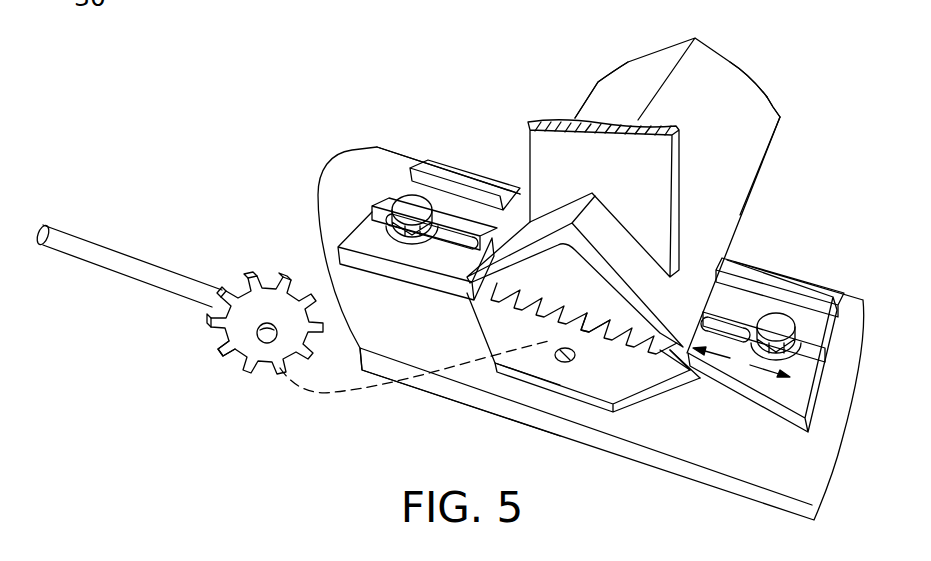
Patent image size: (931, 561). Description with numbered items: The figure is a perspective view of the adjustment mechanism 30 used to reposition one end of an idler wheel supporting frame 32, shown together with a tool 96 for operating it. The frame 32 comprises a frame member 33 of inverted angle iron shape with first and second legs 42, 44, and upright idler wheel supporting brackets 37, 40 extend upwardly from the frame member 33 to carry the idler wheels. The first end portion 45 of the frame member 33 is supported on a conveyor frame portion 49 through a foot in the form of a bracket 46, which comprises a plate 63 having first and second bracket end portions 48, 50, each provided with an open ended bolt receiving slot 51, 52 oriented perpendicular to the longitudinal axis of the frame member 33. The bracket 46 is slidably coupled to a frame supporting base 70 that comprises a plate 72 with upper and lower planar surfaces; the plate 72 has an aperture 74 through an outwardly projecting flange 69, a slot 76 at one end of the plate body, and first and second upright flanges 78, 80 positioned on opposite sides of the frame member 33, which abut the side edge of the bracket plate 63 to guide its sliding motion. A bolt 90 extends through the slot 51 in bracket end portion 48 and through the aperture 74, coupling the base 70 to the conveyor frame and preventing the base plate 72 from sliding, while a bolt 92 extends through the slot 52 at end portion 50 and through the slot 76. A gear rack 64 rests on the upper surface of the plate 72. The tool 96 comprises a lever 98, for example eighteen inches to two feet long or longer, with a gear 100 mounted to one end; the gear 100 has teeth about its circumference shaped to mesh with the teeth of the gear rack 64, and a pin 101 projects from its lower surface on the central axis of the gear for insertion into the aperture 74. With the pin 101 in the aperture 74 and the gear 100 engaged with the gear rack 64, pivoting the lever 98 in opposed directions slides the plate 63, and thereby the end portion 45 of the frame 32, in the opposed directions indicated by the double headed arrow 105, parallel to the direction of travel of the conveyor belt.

The adjustment mechanism 30 is at (385, 426).
The idler wheel supporting frame 32 is at (715, 74).
The frame member 33 is at (752, 133).
The upright idler wheel supporting bracket 37 is at (589, 168).
The upright idler wheel supporting bracket 40 is at (746, 114).
The first leg 42 is at (718, 196).
The second leg 44 is at (623, 87).
The first end portion 45 is at (711, 238).
The bracket 46 is at (492, 202).
The first bracket end portion 48 is at (787, 393).
The conveyor frame portion 49 is at (643, 430).
The second bracket end portion 50 is at (400, 262).
The first bolt receiving slot 51 is at (718, 330).
The second bolt receiving slot 52 is at (458, 240).
The plate 63 is at (540, 272).
The gear rack 64 is at (606, 332).
The outwardly projecting flange 69 is at (537, 360).
The frame supporting base 70 is at (500, 379).
The base plate 72 is at (667, 380).
The aperture 74 is at (564, 363).
The slot 76 is at (365, 218).
The first upright flange 78 is at (783, 290).
The second upright flange 80 is at (432, 176).
The bolt 90 is at (780, 328).
The bolt 92 is at (408, 212).
The tool 96 is at (129, 239).
The lever 98 is at (190, 290).
The gear 100 is at (213, 347).
The pin 101 is at (266, 343).
The double headed arrow 105 is at (740, 360).